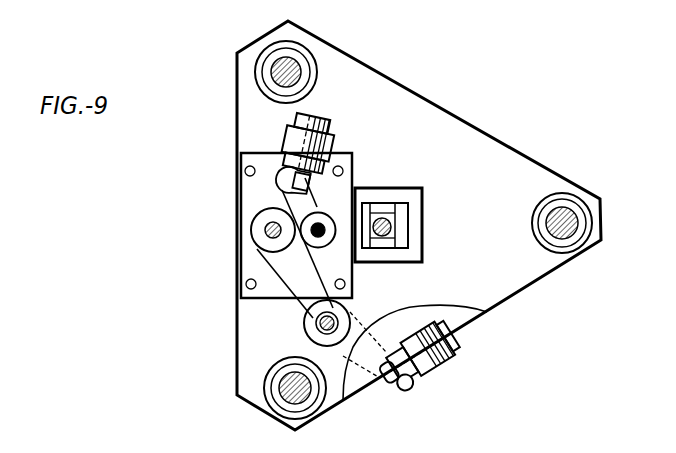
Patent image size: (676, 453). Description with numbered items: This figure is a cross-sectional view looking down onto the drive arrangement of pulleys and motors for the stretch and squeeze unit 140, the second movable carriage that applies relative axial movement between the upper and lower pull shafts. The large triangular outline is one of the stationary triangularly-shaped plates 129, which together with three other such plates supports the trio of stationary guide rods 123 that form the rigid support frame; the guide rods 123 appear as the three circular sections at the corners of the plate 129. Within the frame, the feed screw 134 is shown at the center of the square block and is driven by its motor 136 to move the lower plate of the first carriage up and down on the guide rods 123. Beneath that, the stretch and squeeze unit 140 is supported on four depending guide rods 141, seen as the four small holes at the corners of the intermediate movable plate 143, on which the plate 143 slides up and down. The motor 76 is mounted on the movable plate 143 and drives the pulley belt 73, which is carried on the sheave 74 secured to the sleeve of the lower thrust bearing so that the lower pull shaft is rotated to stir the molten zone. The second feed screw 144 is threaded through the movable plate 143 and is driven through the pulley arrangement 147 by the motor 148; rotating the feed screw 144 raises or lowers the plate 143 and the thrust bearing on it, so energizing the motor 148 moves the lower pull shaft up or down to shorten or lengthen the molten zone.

The pulley belt 73 is at (317, 195).
The sheave 74 is at (325, 237).
The motor 76 is at (295, 120).
The stationary guide rods 123 is at (300, 73).
The stationary triangularly-shaped plate 129 is at (410, 93).
The feed screw 134 is at (388, 222).
The motor 136 is at (415, 232).
The stretch and squeeze unit 140 is at (222, 207).
The depending guide rods 141 is at (247, 169).
The intermediate movable plate 143 is at (240, 237).
The second feed screw 144 is at (282, 238).
The pulley arrangement 147 is at (286, 284).
The motor 148 is at (463, 352).